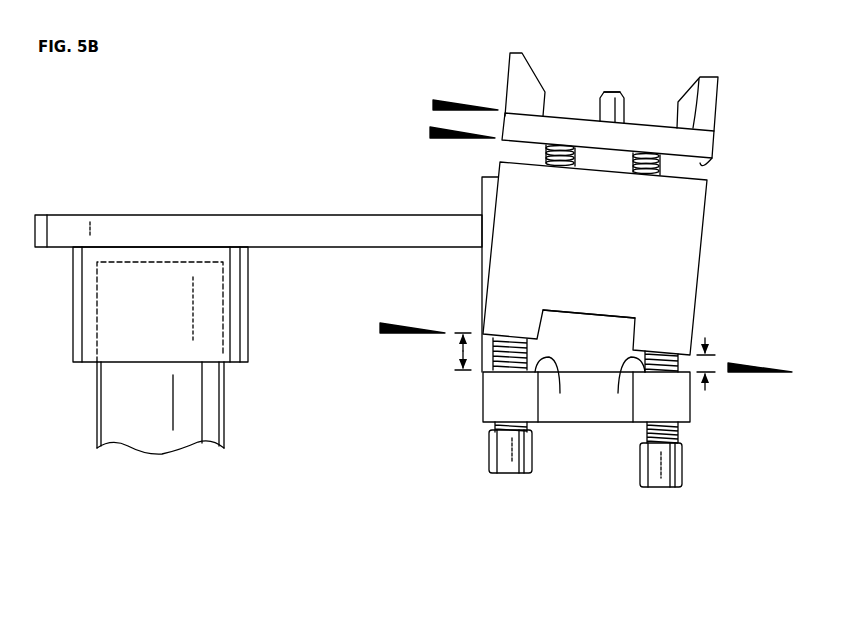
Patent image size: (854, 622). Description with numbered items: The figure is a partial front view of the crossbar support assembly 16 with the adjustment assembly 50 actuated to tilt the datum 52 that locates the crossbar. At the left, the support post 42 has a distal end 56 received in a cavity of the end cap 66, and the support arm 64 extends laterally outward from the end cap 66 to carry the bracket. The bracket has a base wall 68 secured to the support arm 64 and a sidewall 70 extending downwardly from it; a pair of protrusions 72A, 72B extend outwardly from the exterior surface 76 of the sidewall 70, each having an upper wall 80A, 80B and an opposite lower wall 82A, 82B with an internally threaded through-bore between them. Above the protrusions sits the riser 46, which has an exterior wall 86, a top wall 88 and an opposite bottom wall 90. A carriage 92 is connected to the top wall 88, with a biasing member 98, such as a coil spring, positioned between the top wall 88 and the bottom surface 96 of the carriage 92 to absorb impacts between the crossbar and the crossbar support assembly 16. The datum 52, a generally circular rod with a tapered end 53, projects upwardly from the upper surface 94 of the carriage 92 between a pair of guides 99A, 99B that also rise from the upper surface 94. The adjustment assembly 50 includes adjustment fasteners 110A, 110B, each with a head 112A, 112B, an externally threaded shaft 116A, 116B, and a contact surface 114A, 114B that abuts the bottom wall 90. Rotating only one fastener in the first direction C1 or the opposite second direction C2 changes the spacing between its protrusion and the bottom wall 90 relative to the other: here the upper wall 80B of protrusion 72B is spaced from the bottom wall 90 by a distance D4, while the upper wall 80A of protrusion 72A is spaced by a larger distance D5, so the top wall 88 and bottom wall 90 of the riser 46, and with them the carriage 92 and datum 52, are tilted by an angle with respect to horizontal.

The crossbar support assembly 16 is at (146, 150).
The support arm 64 is at (70, 215).
The end cap 66 is at (73, 312).
The distal end 56 is at (205, 262).
The support post 42 is at (98, 413).
The adjustment assembly 50 is at (754, 534).
The carriage 92 is at (713, 148).
The guide 99A is at (518, 53).
The guide 99B is at (712, 77).
The upper surface 94 is at (693, 96).
The datum 52 is at (629, 112).
The tapered end 53 is at (614, 92).
The biasing member 98 is at (633, 164).
The bottom surface 96 is at (701, 168).
The top wall 88 is at (672, 182).
The exterior wall 86 is at (702, 200).
The riser 46 is at (708, 245).
The base wall 68 is at (493, 173).
The sidewall 70 is at (482, 197).
The exterior surface 76 is at (589, 322).
The bottom wall 90 is at (481, 332).
The contact surface 114A is at (512, 338).
The contact surface 114B is at (665, 350).
The externally threaded shaft 116A is at (527, 350).
The externally threaded shaft 116B is at (640, 360).
The protrusion 72A is at (490, 403).
The protrusion 72B is at (690, 397).
The upper wall 80A is at (557, 387).
The upper wall 80B is at (623, 387).
The lower wall 82A is at (492, 429).
The lower wall 82B is at (686, 426).
The head 112A is at (532, 448).
The head 112B is at (645, 448).
The adjustment fastener 110A is at (485, 470).
The adjustment fastener 110B is at (700, 470).
The first direction C1 is at (546, 514).
The second direction C2 is at (487, 516).
The distance D5 is at (455, 350).
The distance D4 is at (712, 364).